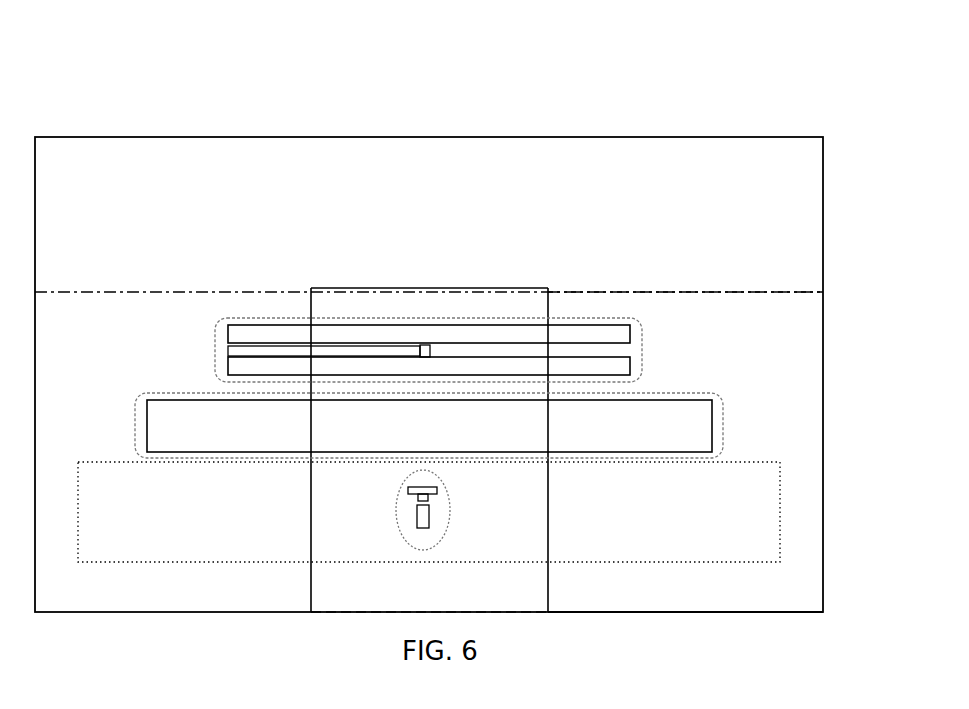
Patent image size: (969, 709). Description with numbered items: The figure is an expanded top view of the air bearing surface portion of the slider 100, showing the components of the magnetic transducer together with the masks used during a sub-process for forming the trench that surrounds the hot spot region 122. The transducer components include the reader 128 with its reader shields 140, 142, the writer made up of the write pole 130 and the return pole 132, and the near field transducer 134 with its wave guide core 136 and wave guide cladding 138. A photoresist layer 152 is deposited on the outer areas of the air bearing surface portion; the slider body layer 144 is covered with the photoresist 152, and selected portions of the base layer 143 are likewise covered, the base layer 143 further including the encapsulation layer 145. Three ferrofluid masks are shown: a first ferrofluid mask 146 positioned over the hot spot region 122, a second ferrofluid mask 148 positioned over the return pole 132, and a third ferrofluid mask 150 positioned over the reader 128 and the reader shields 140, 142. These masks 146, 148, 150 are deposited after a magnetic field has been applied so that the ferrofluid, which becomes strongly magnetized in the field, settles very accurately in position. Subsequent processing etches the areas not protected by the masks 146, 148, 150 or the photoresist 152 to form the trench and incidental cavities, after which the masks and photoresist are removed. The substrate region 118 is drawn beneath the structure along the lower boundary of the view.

The slider 100 is at (738, 120).
The substrate 118 is at (648, 614).
The hot spot region 122 is at (338, 543).
The reader 128 is at (420, 349).
The write pole 130 is at (418, 515).
The return pole 132 is at (447, 435).
The near field transducer 134 is at (418, 498).
The wave guide core 136 is at (408, 491).
The wave guide cladding 138 is at (742, 462).
The reader shield 140 is at (618, 325).
The reader shield 142 is at (620, 357).
The base layer 143 is at (796, 327).
The slider body layer 144 is at (794, 258).
The encapsulation layer 145 is at (477, 598).
The first ferrofluid mask 146 is at (440, 549).
The second ferrofluid mask 148 is at (700, 393).
The third ferrofluid mask 150 is at (600, 316).
The photoresist layer 152 is at (502, 211).